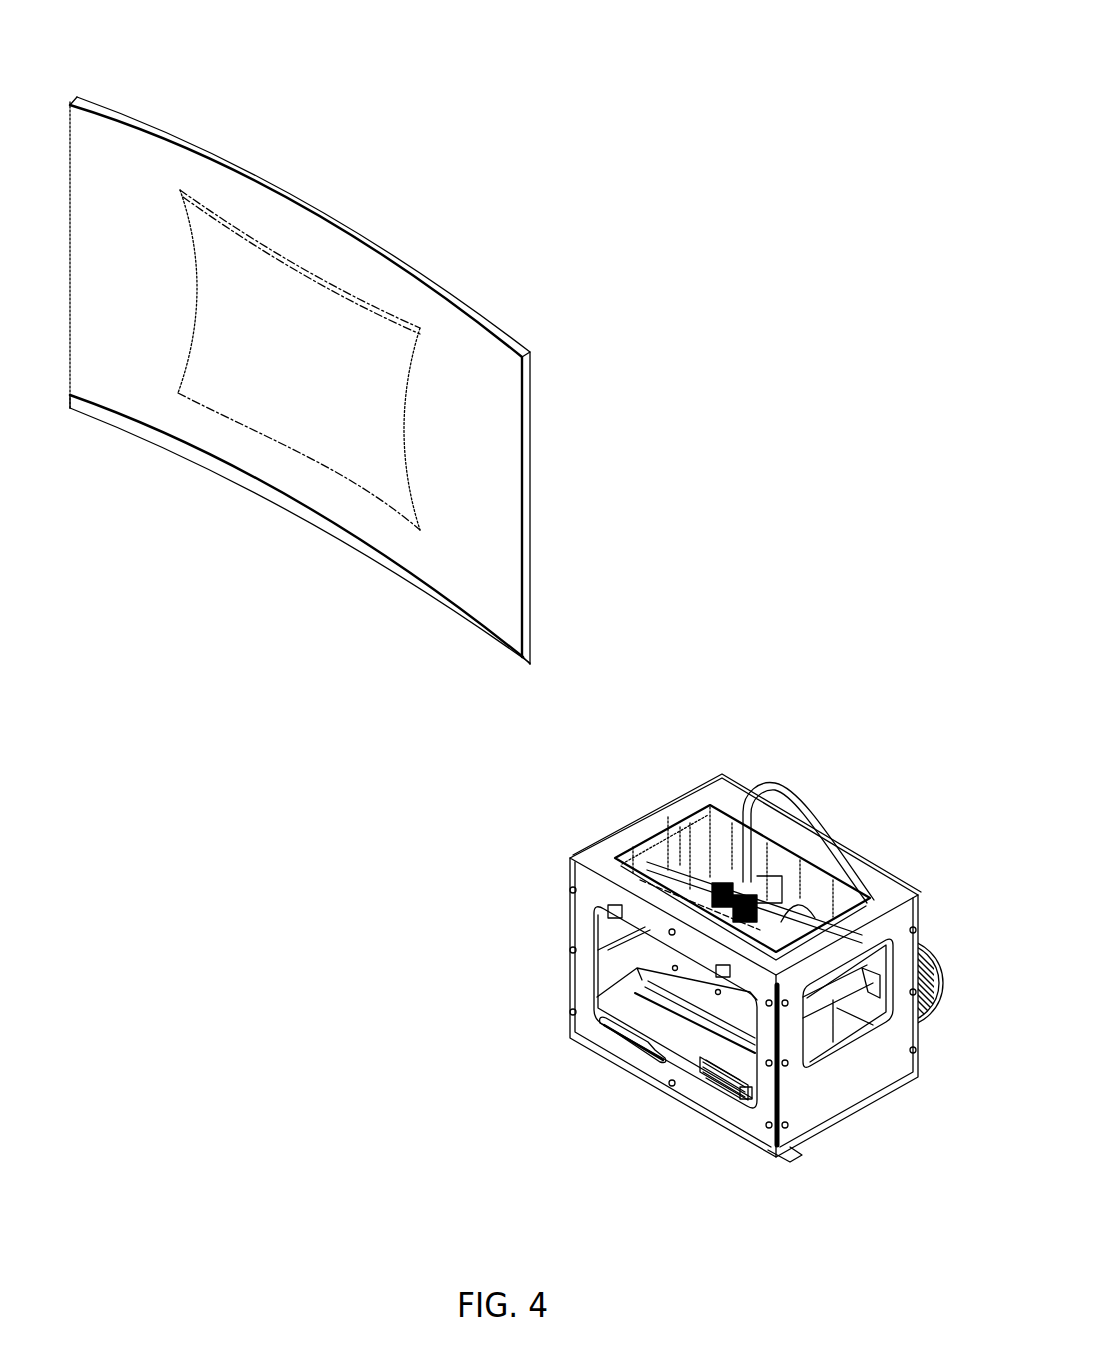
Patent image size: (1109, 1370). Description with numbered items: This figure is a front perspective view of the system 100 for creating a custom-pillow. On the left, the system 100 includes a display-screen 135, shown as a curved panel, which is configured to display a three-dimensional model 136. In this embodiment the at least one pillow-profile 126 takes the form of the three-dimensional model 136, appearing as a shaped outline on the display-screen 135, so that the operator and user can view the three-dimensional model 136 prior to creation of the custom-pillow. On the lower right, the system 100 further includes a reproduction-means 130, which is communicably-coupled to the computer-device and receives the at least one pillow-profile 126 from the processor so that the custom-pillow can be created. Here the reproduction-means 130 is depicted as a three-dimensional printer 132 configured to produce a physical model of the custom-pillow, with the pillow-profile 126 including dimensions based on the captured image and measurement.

The system 100 is at (873, 67).
The display-screen 135 is at (148, 167).
The pillow-profile 126 is at (242, 283).
The three-dimensional model 136 is at (333, 348).
The reproduction-means 130 is at (600, 852).
The three-dimensional printer 132 is at (723, 797).